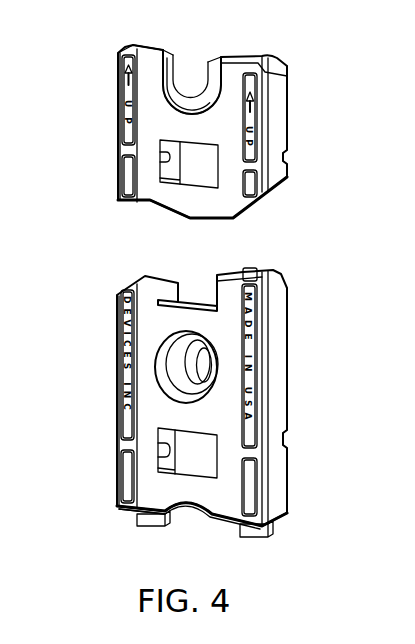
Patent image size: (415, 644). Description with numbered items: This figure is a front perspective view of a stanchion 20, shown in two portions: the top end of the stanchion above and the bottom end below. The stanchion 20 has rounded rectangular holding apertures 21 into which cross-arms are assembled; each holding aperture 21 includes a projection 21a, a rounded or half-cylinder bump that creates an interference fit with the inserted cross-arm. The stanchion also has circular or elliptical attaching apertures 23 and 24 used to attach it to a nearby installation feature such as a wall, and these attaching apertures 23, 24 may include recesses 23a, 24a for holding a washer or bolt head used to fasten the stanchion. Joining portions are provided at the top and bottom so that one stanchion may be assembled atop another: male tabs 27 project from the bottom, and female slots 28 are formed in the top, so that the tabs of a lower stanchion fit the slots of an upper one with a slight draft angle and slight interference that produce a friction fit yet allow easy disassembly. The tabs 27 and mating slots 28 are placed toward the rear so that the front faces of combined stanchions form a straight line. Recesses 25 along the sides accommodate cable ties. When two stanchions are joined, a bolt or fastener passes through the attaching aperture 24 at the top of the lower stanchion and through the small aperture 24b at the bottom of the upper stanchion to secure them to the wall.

The stanchion 20 is at (125, 512).
The holding aperture 21 is at (160, 170).
The projection 21a is at (160, 156).
The attaching aperture 23 is at (160, 363).
The recess 23a is at (177, 345).
The attaching aperture 24 is at (182, 71).
The recess 24a is at (123, 48).
The small aperture 24b is at (187, 510).
The recess for cable ties 25 is at (287, 153).
The male tab 27 is at (243, 537).
The female slot 28 is at (263, 52).